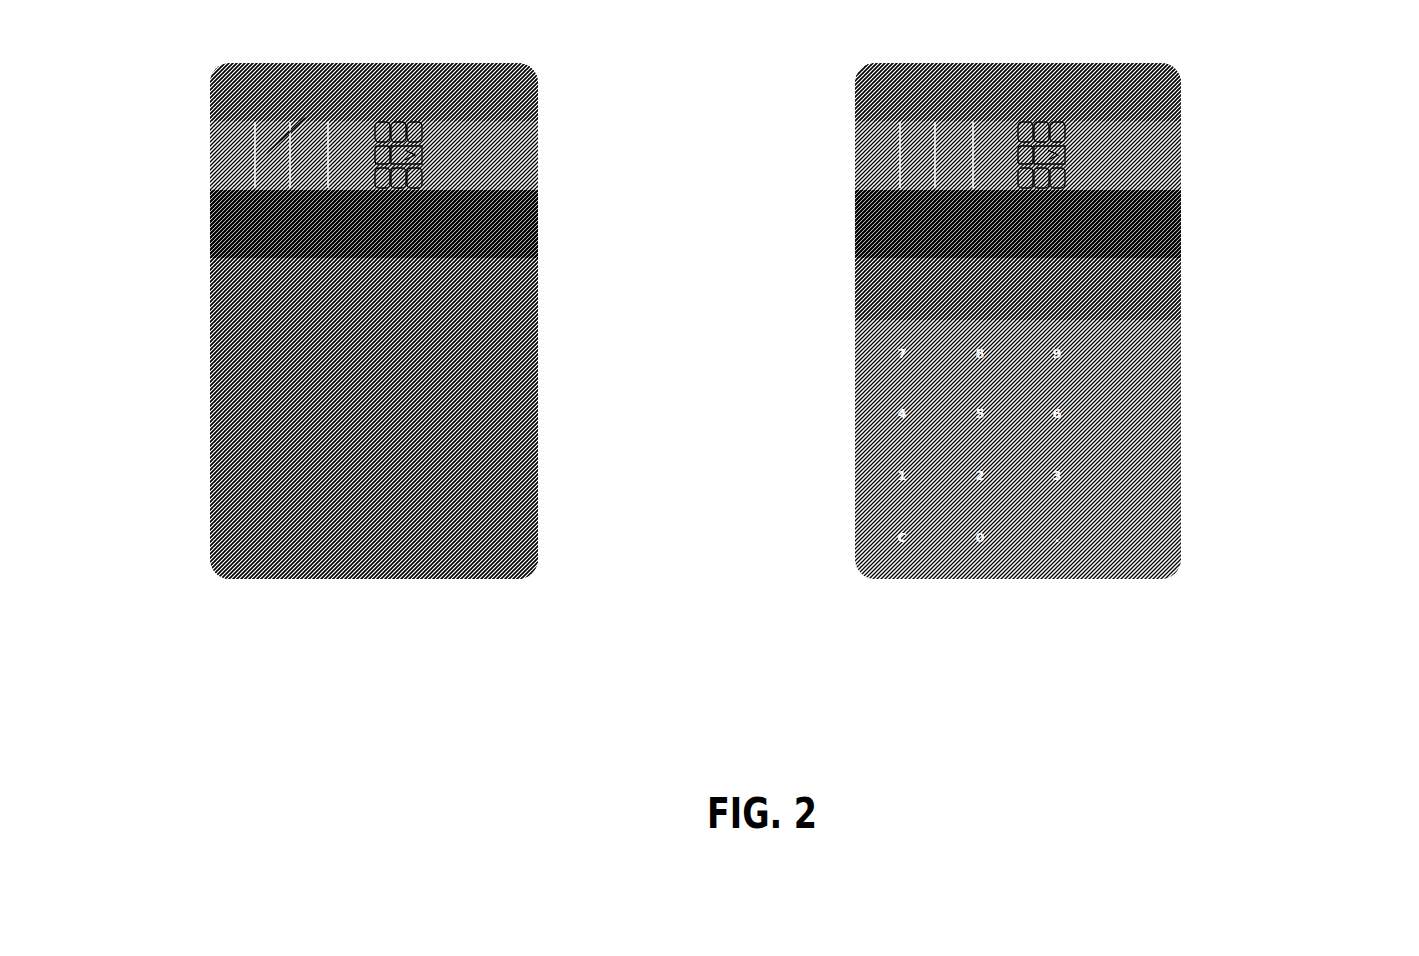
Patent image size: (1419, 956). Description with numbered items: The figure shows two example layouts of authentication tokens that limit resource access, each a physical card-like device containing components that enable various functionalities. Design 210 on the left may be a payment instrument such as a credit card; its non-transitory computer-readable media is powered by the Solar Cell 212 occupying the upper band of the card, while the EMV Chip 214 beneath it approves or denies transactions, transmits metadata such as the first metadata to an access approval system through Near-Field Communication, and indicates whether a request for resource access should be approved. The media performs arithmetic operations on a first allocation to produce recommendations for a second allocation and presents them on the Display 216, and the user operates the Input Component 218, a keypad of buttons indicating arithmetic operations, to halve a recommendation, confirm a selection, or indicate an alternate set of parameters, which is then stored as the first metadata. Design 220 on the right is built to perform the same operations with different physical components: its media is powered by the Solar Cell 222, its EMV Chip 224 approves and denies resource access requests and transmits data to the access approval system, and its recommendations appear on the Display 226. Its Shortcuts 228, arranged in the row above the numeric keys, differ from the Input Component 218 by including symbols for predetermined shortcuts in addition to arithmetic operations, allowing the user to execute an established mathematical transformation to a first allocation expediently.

The design 210 is at (374, 404).
The solar cell 212 is at (267, 153).
The EMV chip 214 is at (538, 122).
The display 216 is at (538, 203).
The input component 218 is at (353, 353).
The design 220 is at (1018, 404).
The solar cell 222 is at (912, 157).
The EMV chip 224 is at (1181, 122).
The display 226 is at (1181, 190).
The shortcuts 228 is at (1181, 247).